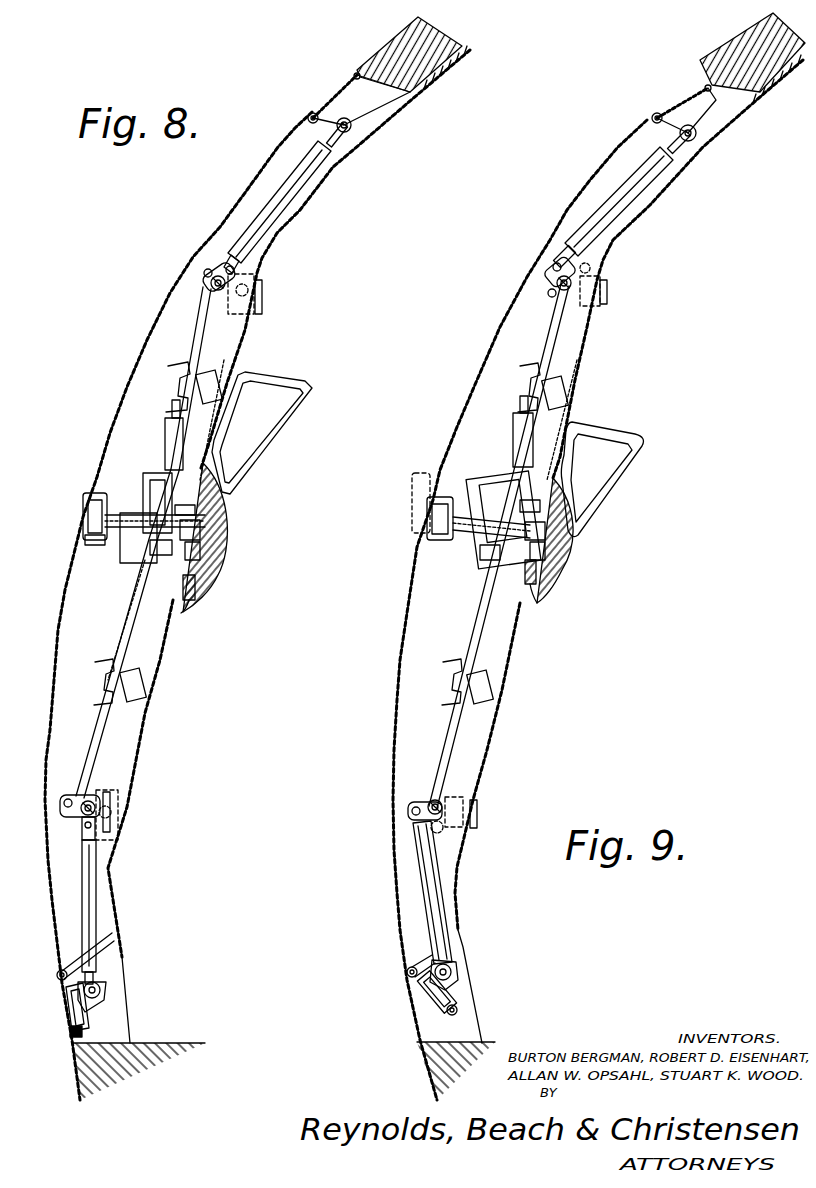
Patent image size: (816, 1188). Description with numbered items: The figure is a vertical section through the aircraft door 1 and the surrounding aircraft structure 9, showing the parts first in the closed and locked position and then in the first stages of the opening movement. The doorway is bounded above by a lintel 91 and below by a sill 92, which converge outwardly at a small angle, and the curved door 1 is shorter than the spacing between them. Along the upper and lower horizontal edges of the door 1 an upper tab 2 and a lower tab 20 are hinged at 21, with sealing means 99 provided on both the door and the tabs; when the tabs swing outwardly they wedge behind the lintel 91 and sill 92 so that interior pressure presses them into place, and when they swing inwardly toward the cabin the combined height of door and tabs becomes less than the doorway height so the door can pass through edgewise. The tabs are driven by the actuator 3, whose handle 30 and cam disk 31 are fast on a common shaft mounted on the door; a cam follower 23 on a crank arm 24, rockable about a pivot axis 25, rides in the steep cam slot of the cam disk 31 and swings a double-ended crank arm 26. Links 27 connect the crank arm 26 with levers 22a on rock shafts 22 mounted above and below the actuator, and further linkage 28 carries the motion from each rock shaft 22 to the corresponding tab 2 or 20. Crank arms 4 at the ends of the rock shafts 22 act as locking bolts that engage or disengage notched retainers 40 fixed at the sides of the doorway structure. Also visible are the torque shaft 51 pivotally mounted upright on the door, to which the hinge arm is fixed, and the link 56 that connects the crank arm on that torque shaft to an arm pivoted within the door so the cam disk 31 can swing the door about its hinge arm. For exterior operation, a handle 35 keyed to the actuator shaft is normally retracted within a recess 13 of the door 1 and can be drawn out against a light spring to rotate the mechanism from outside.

In FIG. 8, the door 1 is at (55, 637).
In FIG. 9, the door 1 is at (565, 207).
In FIG. 8, the upper tab 2 is at (328, 100).
In FIG. 9, the upper tab 2 is at (683, 97).
In FIG. 8, the actuator 3 is at (218, 572).
In FIG. 9, the actuator 3 is at (568, 572).
In FIG. 8, the crank arm 4 is at (250, 320).
In FIG. 9, the crank arm 4 is at (592, 266).
In FIG. 8, the aircraft structure 9 is at (378, 50).
In FIG. 8, the recess 13 is at (82, 541).
In FIG. 9, the recess 13 is at (428, 538).
In FIG. 8, the lower tab 20 is at (66, 1020).
In FIG. 9, the lower tab 20 is at (458, 980).
In FIG. 8, the hinge 21 is at (305, 119).
In FIG. 9, the hinge 21 is at (652, 117).
In FIG. 8, the rock shaft 22 is at (212, 285).
In FIG. 9, the rock shaft 22 is at (556, 283).
In FIG. 8, the lever 22a is at (224, 276).
In FIG. 9, the lever 22a is at (554, 266).
In FIG. 8, the cam follower 23 is at (200, 530).
In FIG. 9, the cam follower 23 is at (545, 530).
In FIG. 8, the crank arm 24 is at (200, 548).
In FIG. 9, the crank arm 24 is at (546, 548).
In FIG. 8, the pivot axis 25 is at (150, 525).
In FIG. 9, the pivot axis 25 is at (492, 527).
In FIG. 8, the double-ended crank arm 26 is at (150, 542).
In FIG. 9, the double-ended crank arm 26 is at (490, 553).
In FIG. 8, the link 27 is at (196, 348).
In FIG. 9, the link 27 is at (548, 346).
In FIG. 8, the linkage 28 is at (282, 218).
In FIG. 9, the linkage 28 is at (612, 218).
In FIG. 8, the handle 30 is at (292, 385).
In FIG. 9, the handle 30 is at (642, 440).
In FIG. 8, the cam disk 31 is at (184, 596).
In FIG. 9, the cam disk 31 is at (539, 600).
In FIG. 8, the handle 35 is at (85, 520).
In FIG. 9, the handle 35 is at (420, 518).
In FIG. 8, the retainer 40 is at (258, 275).
In FIG. 9, the retainer 40 is at (610, 293).
In FIG. 8, the torque shaft 51 is at (168, 452).
In FIG. 9, the torque shaft 51 is at (514, 448).
In FIG. 8, the link 56 is at (195, 510).
In FIG. 9, the link 56 is at (542, 508).
In FIG. 8, the lintel 91 is at (413, 97).
In FIG. 9, the lintel 91 is at (742, 102).
In FIG. 8, the sill 92 is at (112, 1043).
In FIG. 9, the sill 92 is at (420, 1042).
In FIG. 8, the sealing means 99 is at (360, 80).
In FIG. 9, the sealing means 99 is at (708, 85).